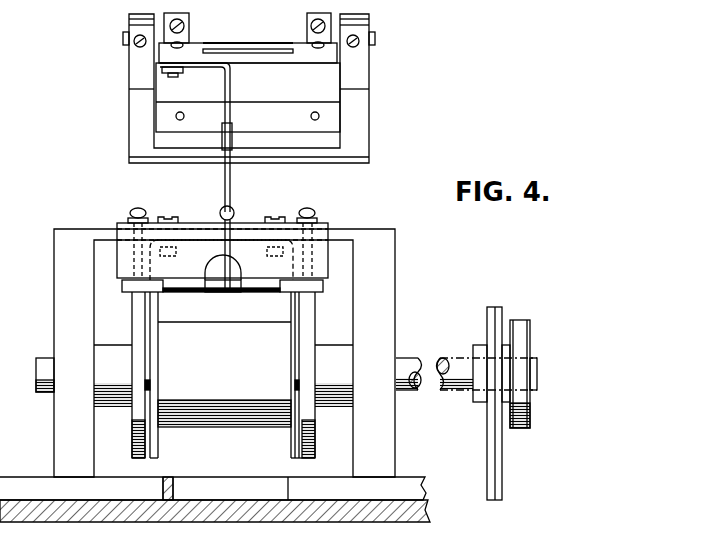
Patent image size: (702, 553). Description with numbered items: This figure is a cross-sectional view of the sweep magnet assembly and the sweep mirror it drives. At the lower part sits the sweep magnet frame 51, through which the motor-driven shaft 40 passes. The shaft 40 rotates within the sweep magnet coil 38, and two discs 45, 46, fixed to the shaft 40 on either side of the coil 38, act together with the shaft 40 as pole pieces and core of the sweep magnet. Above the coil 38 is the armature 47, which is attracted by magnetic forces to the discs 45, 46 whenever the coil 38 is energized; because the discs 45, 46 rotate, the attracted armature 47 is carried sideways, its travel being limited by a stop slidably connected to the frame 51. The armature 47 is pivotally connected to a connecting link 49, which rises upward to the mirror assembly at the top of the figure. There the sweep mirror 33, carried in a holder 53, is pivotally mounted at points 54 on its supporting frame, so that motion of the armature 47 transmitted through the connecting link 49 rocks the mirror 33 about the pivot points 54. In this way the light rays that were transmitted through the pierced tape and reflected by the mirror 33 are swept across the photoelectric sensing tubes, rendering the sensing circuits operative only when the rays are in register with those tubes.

The sweep mirror 33 is at (232, 44).
The sweep magnet coil 38 is at (233, 427).
The shaft 40 is at (407, 358).
The disc 45 is at (133, 456).
The disc 46 is at (315, 452).
The armature 47 is at (323, 285).
The connecting link 49 is at (231, 194).
The sweep magnet frame 51 is at (396, 315).
The blade holder plate 53 is at (300, 63).
The pivot points 54 is at (123, 37).